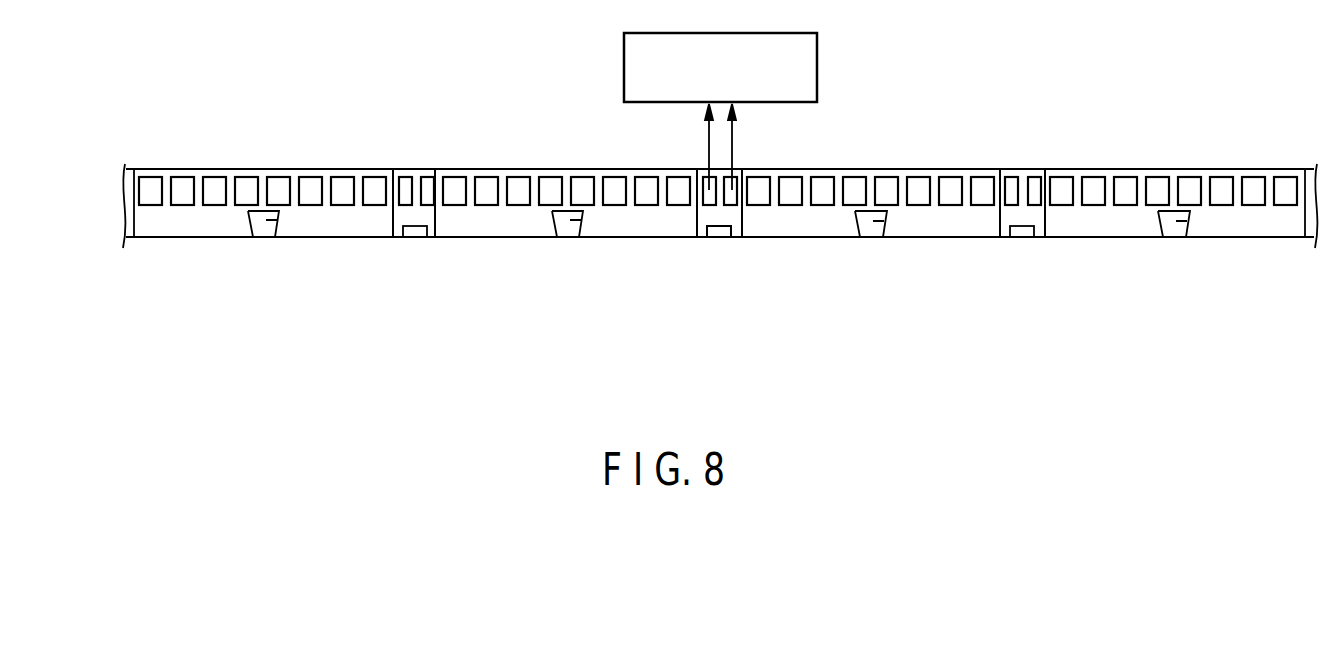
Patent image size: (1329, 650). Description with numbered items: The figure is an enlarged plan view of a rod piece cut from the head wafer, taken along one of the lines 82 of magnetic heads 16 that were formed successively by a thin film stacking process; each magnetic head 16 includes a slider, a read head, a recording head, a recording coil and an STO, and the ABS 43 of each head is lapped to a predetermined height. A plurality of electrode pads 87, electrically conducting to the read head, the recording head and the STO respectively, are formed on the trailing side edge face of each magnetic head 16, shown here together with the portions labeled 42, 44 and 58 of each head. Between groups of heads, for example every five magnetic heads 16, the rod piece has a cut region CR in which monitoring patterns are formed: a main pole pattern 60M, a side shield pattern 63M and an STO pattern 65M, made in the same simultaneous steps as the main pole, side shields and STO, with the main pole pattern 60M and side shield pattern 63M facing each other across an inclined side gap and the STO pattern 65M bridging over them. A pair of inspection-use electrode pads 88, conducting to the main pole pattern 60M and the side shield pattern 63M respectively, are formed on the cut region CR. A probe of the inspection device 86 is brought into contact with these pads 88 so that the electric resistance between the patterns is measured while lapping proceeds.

The magnetic head 16 is at (133, 289).
The side surface of car body 42 is at (333, 170).
The ABS 43 is at (345, 238).
The step 44 is at (277, 220).
The underfloor device 58 is at (262, 238).
The line 82 is at (1276, 163).
The inspection device 86 is at (818, 66).
The electrode pad 87 is at (280, 181).
The inspection-use electrode pad 88 is at (423, 184).
The cut region CR is at (426, 178).
The main pole pattern 60M is at (719, 238).
The side shield pattern 63M is at (722, 294).
The STO pattern 65M is at (751, 294).